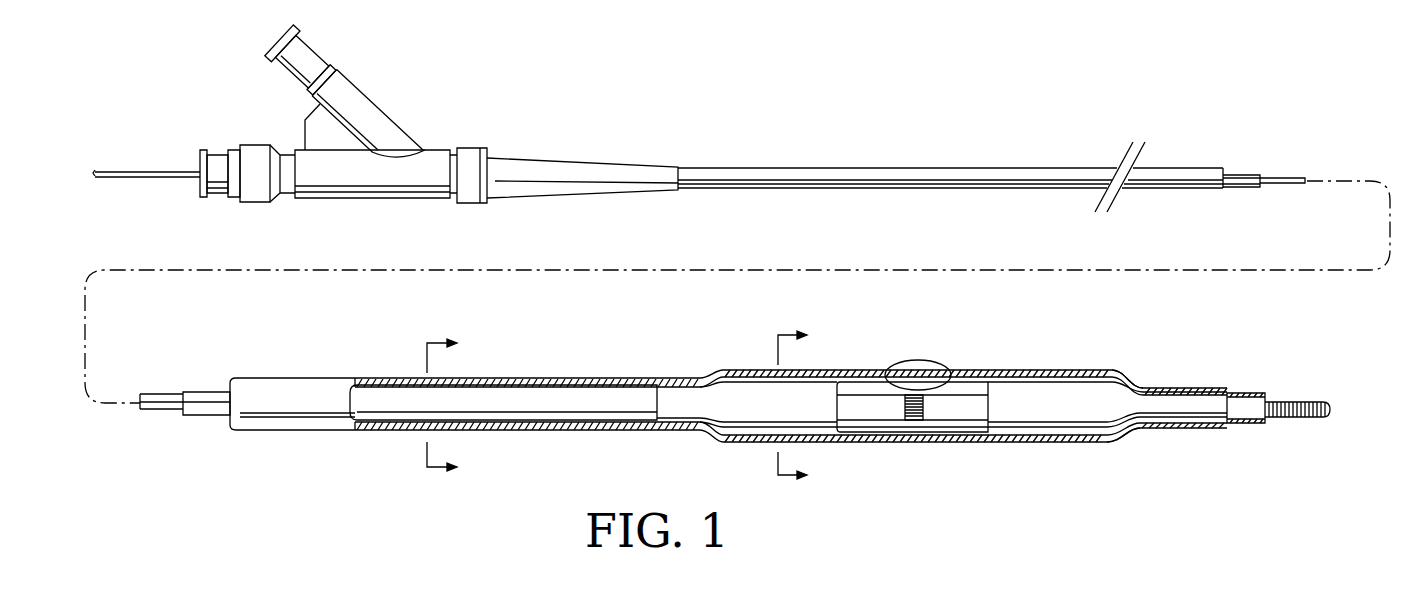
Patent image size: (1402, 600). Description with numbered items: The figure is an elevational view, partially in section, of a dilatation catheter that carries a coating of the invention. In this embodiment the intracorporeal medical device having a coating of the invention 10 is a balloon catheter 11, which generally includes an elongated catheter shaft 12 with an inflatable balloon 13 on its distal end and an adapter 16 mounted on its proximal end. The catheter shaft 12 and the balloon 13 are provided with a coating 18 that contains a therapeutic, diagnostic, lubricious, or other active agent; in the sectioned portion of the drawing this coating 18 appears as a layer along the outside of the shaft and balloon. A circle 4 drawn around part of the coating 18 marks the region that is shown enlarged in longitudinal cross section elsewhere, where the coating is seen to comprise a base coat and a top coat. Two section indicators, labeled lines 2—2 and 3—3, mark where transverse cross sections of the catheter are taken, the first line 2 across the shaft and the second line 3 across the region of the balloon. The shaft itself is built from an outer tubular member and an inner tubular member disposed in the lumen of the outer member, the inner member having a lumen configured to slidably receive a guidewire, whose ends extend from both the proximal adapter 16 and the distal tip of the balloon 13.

The intracorporeal medical device having a coating 10 is at (1053, 117).
The balloon catheter 11 is at (717, 167).
The elongated catheter shaft 12 is at (958, 189).
The inflatable balloon 13 is at (1075, 402).
The adapter 16 is at (413, 133).
The coating 18 is at (587, 427).
The circle 4 is at (930, 362).
The line 2- 2 is at (454, 410).
The line 3- 3 is at (805, 411).